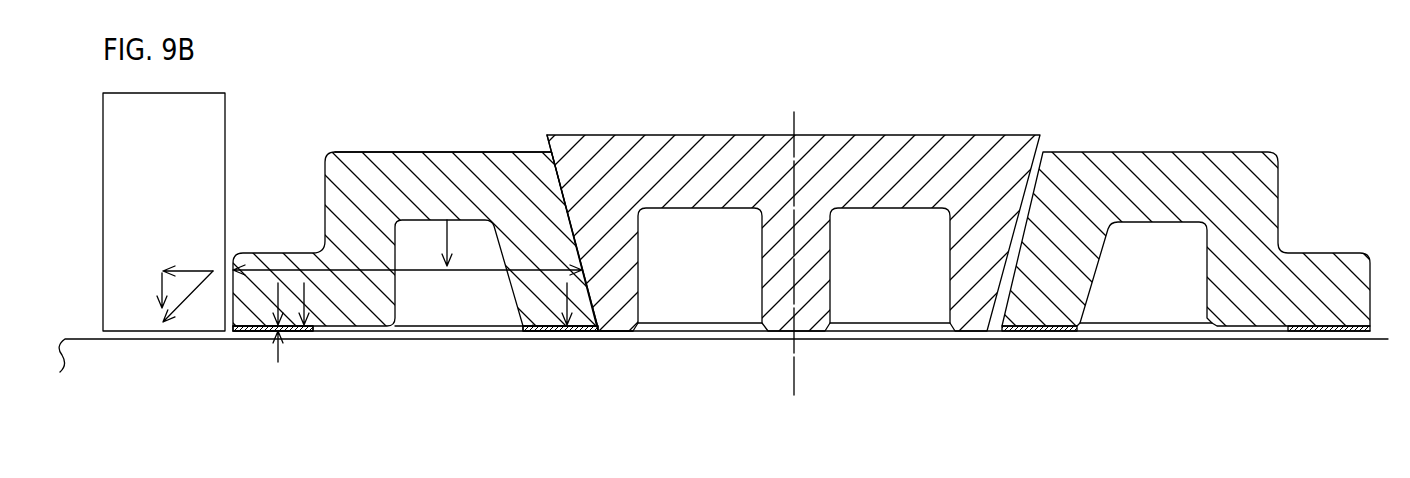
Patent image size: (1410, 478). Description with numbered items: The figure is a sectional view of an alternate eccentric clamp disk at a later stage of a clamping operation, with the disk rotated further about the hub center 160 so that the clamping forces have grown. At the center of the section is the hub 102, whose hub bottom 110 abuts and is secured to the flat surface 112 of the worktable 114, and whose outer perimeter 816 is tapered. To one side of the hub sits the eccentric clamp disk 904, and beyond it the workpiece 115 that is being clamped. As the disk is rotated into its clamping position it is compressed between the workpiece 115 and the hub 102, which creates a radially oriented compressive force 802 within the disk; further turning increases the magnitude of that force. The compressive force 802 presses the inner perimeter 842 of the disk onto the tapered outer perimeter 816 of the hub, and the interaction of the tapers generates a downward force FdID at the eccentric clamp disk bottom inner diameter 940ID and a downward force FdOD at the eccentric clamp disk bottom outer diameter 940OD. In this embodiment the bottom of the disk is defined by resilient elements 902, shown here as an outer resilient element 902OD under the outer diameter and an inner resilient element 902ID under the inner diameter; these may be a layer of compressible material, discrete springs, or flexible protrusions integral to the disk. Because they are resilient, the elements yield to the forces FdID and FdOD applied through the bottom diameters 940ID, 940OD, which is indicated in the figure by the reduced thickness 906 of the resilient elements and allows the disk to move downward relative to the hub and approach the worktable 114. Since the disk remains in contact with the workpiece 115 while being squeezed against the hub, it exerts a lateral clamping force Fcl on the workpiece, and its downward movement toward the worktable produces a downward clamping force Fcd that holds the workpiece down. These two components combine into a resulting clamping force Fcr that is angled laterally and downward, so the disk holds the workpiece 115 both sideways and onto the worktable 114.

The workpiece 115 is at (186, 169).
The compressive force 802 is at (357, 268).
The inner perimeter 842 is at (557, 178).
The outer perimeter 816 is at (562, 190).
The hub 102 is at (908, 158).
The eccentric clamp disk 904 is at (1163, 165).
The resilient elements 902 is at (744, 365).
The outer resilient element 902OD is at (248, 332).
The inner resilient element 902ID is at (545, 333).
The thickness 906 is at (278, 362).
The eccentric clamp disk bottom outer diameter 940OD is at (258, 326).
The eccentric clamp disk bottom inner diameter 940ID is at (533, 325).
The hub center 160 is at (794, 367).
The hub bottom 110 is at (813, 331).
The flat surface 112 is at (1120, 339).
The worktable 114 is at (723, 355).
The lateral clamping force Fcl is at (187, 270).
The downward clamping force Fcd is at (160, 292).
The resulting clamping force Fcr is at (190, 296).
The downward force on bottom outer diameter FdOD is at (303, 293).
The downward force on bottom inner diameter FdID is at (570, 300).